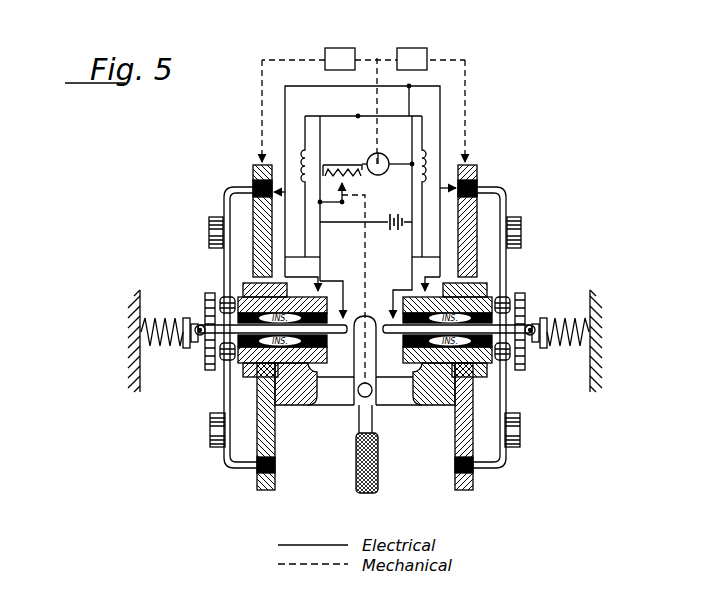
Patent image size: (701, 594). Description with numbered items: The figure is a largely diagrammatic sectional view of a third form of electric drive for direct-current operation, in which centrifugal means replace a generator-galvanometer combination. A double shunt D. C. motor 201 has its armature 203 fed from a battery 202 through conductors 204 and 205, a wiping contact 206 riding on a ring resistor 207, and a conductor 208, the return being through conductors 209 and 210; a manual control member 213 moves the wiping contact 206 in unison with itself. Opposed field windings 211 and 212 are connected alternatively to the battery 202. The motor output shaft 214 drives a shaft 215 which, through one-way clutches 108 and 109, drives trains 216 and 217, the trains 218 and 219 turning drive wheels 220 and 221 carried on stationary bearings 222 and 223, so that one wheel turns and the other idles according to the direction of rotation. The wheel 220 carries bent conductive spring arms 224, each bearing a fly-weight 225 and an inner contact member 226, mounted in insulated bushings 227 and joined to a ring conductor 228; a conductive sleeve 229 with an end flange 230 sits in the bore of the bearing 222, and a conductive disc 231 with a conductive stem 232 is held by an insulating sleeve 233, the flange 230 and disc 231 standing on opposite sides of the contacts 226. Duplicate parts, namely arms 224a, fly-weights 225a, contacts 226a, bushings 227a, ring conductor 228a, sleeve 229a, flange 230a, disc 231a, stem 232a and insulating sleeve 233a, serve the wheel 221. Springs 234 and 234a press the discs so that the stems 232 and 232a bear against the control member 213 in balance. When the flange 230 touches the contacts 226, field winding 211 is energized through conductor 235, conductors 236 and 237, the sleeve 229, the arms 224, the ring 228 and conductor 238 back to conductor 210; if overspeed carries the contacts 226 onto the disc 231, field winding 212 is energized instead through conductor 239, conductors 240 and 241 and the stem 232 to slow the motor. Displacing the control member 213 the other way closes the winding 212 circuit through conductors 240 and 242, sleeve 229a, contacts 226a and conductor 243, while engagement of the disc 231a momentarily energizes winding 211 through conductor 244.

The one-way clutch 108 is at (415, 48).
The one-way clutch 109 is at (338, 48).
The double shunt D. C. motor 201 is at (358, 116).
The battery 202 is at (400, 230).
The motor armature 203 is at (371, 155).
The conductor 204 is at (320, 128).
The conductor 205 is at (320, 207).
The wiping contact 206 is at (345, 188).
The ring resistor 207 is at (396, 177).
The conductor 208 is at (350, 166).
The conductor 209 is at (386, 153).
The conductor 210 is at (397, 207).
The field winding 211 is at (441, 204).
The field winding 212 is at (287, 207).
The manual control member 213 is at (378, 470).
The motor output shaft 214 is at (377, 77).
The shaft 215 is at (378, 55).
The drive train 216 is at (466, 58).
The drive train 217 is at (270, 40).
The train 218 is at (466, 100).
The train 219 is at (262, 104).
The drive wheel 220 is at (486, 204).
The drive wheel 221 is at (275, 221).
The stationary bearing 222 is at (472, 276).
The stationary bearing 223 is at (282, 280).
The bent conductive spring arm 224 is at (508, 208).
The bent conductive spring arm 224a is at (232, 190).
The fly-weight 225 is at (522, 230).
The fly-weight 225a is at (208, 230).
The contact member 226 is at (508, 296).
The contact member 226a is at (222, 296).
The insulated bushing 227 is at (478, 186).
The insulated bushing 227a is at (245, 193).
The ring conductor 228 is at (431, 240).
The ring conductor 228a is at (262, 156).
The conductive sleeve 229 is at (416, 368).
The conductive sleeve 229a is at (313, 384).
The end flange 230 is at (492, 368).
The end flange 230a is at (238, 366).
The conductive disc 231 is at (525, 305).
The conductive disc 231a is at (205, 302).
The conductive stem 232 is at (376, 318).
The conductive stem 232a is at (331, 386).
The insulating sleeve 233 is at (410, 348).
The insulating sleeve 233a is at (337, 292).
The spring 234 is at (556, 345).
The spring 234a is at (168, 346).
The conductor 235 is at (409, 110).
The conductor 236 is at (436, 187).
The conductor 237 is at (437, 275).
The conductor 238 is at (466, 135).
The conductor 239 is at (305, 128).
The conductor 240 is at (298, 240).
The conductor 241 is at (348, 260).
The conductor 242 is at (303, 278).
The conductor 243 is at (316, 86).
The conductor 244 is at (408, 280).